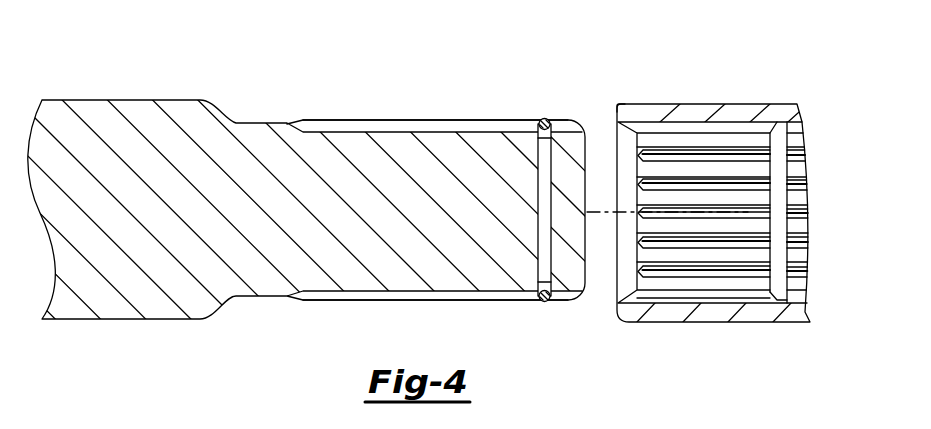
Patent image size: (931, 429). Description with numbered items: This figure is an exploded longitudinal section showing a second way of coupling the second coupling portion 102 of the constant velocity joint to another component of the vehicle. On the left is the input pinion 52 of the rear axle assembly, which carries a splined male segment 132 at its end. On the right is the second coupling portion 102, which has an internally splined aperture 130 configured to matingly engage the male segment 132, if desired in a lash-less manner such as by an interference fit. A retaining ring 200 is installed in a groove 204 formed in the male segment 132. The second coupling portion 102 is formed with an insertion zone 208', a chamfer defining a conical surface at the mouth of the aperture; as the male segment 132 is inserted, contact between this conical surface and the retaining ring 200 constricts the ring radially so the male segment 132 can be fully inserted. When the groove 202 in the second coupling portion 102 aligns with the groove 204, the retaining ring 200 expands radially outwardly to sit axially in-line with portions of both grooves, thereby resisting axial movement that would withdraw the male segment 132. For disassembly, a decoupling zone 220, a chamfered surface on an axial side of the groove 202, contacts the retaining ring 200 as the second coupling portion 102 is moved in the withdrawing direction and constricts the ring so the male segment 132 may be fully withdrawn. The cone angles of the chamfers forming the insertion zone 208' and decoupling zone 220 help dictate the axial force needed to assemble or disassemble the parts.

The input pinion 52 is at (172, 302).
The splined male segment 132 is at (419, 292).
The retaining ring 200 is at (544, 118).
The groove 204 is at (549, 301).
The second coupling portion 102 is at (738, 115).
The insertion zone 208' is at (628, 81).
The internally splined aperture 130 is at (690, 273).
The groove 202 is at (780, 222).
The decoupling zone 220 is at (780, 287).